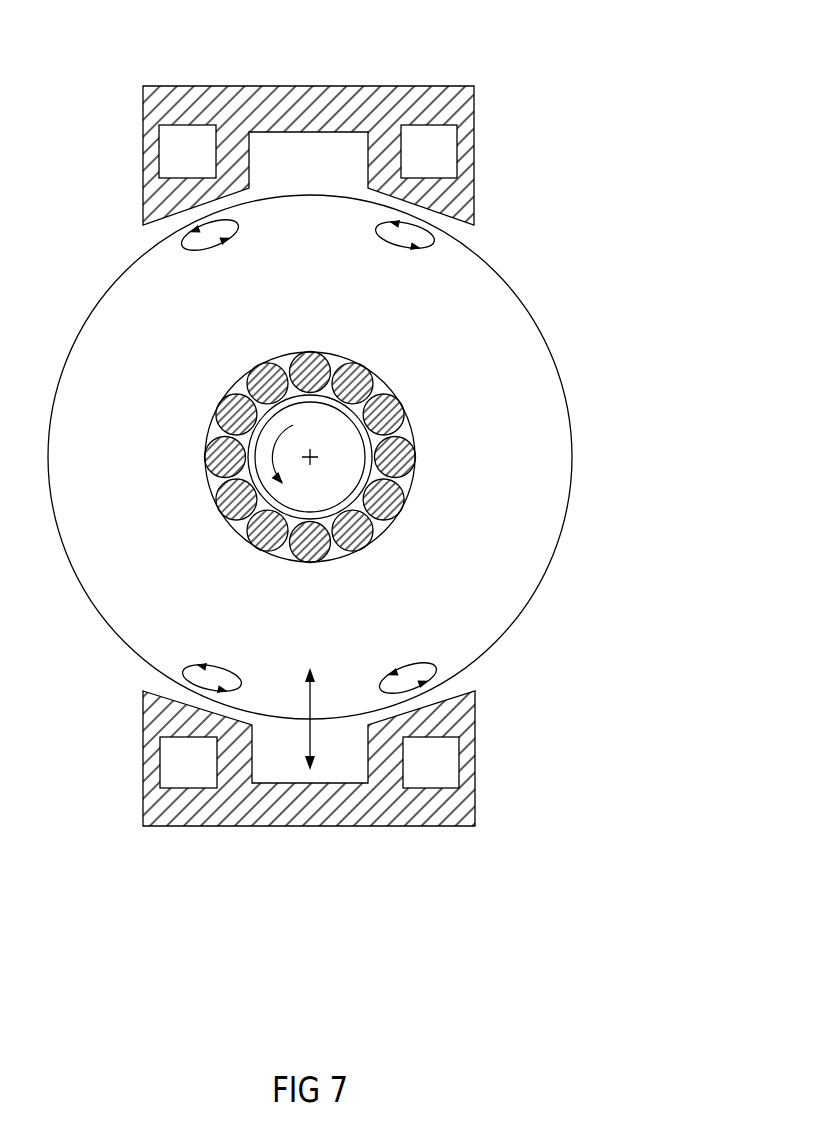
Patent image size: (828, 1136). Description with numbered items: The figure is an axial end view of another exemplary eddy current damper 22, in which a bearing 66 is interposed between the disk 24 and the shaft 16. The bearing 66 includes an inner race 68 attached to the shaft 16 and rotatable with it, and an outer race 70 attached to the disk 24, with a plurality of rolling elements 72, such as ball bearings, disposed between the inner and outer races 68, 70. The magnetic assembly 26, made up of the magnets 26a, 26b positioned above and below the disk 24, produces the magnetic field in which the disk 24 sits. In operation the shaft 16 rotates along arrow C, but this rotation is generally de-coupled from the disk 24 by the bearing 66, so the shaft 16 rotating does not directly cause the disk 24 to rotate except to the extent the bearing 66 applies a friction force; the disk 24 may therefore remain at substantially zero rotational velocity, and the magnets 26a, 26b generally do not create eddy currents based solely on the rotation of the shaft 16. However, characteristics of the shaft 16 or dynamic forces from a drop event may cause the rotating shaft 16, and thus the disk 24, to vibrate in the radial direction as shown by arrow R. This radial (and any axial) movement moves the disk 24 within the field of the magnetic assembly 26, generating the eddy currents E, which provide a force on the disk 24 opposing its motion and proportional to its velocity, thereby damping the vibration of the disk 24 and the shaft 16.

The shaft 16 is at (350, 462).
The eddy current damper 22 is at (572, 158).
The disk 24 is at (563, 393).
The magnetic assembly 26 is at (300, 86).
The magnet 26a is at (470, 86).
The magnet 26b is at (475, 826).
The bearing 66 is at (410, 490).
The inner race 68 is at (293, 522).
The outer race 70 is at (373, 538).
The rolling elements 72 is at (210, 445).
The arrow C is at (275, 428).
The eddy currents E is at (212, 244).
The arrow R is at (312, 700).